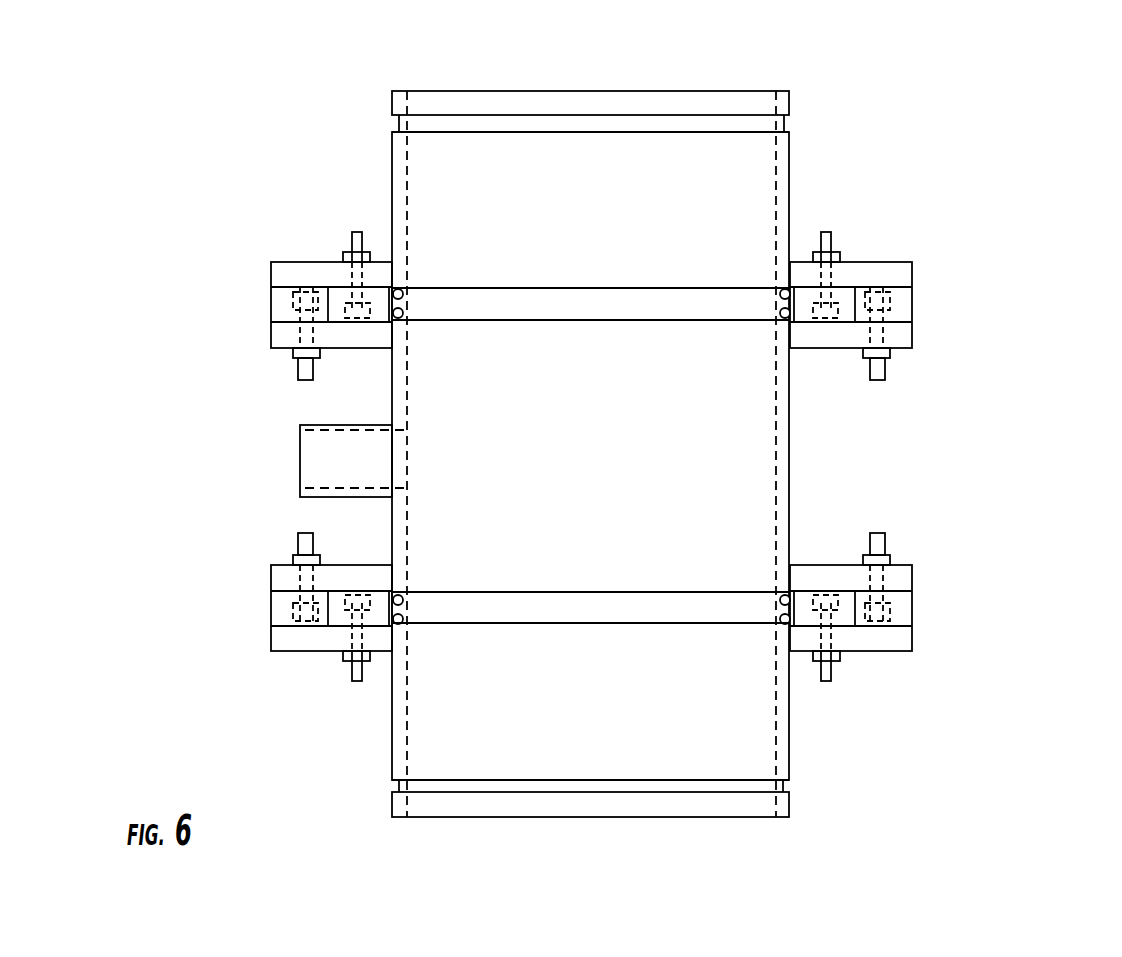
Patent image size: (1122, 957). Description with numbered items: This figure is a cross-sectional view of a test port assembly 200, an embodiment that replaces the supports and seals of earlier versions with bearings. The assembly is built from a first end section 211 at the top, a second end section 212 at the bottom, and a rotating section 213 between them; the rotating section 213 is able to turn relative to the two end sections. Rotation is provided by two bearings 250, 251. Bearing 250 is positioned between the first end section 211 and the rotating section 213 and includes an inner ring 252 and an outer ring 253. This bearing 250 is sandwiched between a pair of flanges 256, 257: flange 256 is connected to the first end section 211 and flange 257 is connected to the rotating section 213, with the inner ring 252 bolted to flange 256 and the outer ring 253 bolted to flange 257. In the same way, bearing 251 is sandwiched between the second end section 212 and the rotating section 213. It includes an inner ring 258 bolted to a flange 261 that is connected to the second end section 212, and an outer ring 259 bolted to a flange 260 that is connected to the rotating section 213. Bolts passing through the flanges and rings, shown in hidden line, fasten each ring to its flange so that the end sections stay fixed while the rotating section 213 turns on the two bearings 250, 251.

The test port assembly 200 is at (902, 130).
The first end section 211 is at (745, 178).
The second end section 212 is at (746, 752).
The rotating section 213 is at (750, 467).
The bearing 250 is at (941, 287).
The bearing 251 is at (926, 585).
The inner ring 252 is at (842, 295).
The outer ring 253 is at (903, 307).
The flange 256 is at (278, 297).
The flange 257 is at (282, 340).
The inner ring 258 is at (848, 598).
The outer ring 259 is at (903, 608).
The flange 260 is at (287, 609).
The flange 261 is at (314, 640).